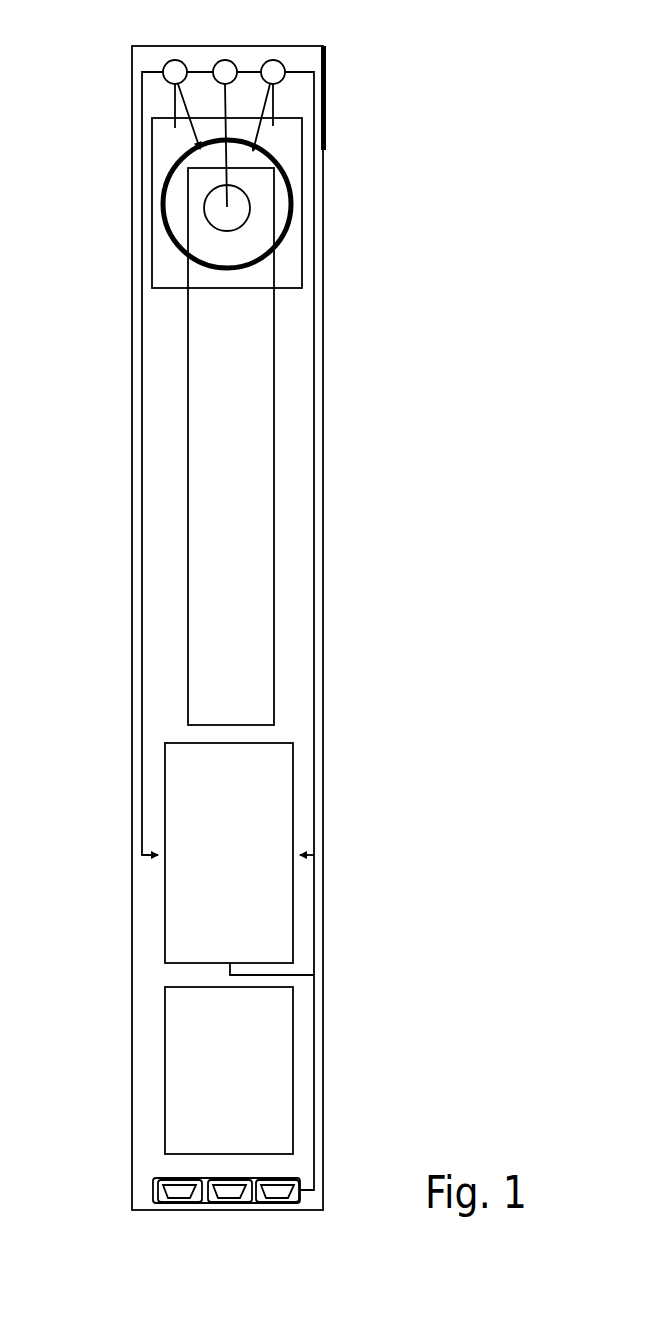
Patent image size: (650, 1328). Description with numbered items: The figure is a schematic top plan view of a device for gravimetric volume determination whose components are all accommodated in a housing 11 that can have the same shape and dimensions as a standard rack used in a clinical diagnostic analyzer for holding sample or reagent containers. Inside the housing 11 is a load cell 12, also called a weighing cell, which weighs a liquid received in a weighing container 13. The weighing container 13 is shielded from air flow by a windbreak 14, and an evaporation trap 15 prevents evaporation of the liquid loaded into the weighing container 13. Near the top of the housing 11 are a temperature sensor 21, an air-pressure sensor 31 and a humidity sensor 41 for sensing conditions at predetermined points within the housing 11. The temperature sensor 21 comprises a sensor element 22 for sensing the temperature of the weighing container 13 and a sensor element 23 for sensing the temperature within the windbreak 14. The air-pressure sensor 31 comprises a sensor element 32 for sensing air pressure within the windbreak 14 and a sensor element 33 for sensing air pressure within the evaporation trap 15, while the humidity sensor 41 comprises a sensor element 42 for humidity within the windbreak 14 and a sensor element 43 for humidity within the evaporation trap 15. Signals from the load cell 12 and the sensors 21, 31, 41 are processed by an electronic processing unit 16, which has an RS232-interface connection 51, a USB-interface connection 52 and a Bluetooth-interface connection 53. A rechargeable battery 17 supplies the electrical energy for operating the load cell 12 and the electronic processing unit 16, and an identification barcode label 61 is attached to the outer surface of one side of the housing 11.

The housing 11 is at (325, 488).
The load cell 12 is at (275, 350).
The weighing container 13 is at (249, 228).
The windbreak 14 is at (151, 277).
The evaporation trap 15 is at (165, 220).
The electronic processing unit 16 is at (294, 807).
The rechargeable battery 17 is at (294, 1050).
The temperature sensor 21 is at (234, 61).
The temperature sensor element 22 is at (327, 111).
The temperature sensor element 23 is at (229, 207).
The air-pressure sensor 31 is at (285, 61).
The air-pressure sensor element 32 is at (250, 112).
The air-pressure sensor element 33 is at (274, 126).
The humidity sensor 41 is at (163, 68).
The humidity sensor element 42 is at (173, 127).
The humidity sensor element 43 is at (195, 151).
The RS232-interface connection 51 is at (280, 1195).
The USB-interface connection 52 is at (222, 1186).
The Bluetooth-interface connection 53 is at (177, 1190).
The identification barcode label 61 is at (327, 128).